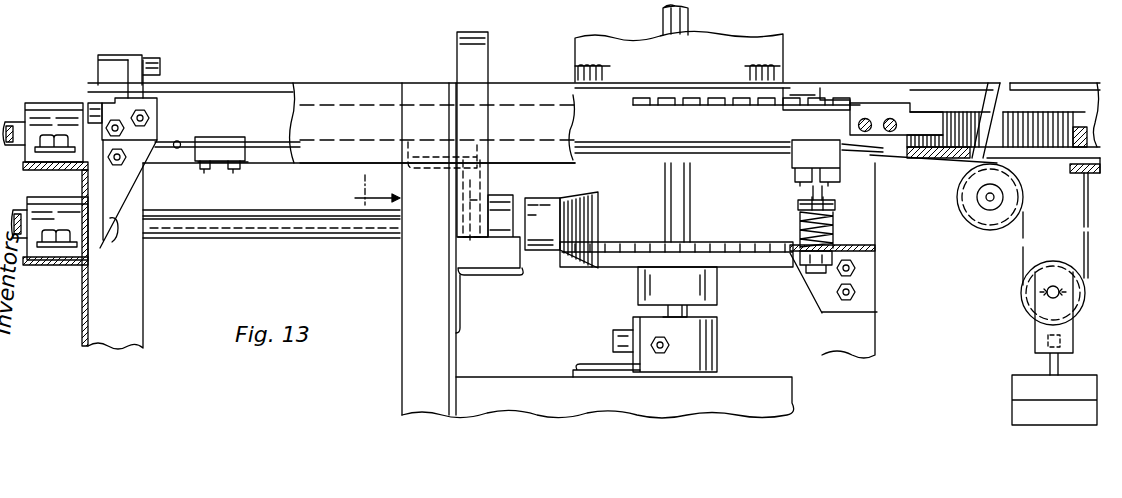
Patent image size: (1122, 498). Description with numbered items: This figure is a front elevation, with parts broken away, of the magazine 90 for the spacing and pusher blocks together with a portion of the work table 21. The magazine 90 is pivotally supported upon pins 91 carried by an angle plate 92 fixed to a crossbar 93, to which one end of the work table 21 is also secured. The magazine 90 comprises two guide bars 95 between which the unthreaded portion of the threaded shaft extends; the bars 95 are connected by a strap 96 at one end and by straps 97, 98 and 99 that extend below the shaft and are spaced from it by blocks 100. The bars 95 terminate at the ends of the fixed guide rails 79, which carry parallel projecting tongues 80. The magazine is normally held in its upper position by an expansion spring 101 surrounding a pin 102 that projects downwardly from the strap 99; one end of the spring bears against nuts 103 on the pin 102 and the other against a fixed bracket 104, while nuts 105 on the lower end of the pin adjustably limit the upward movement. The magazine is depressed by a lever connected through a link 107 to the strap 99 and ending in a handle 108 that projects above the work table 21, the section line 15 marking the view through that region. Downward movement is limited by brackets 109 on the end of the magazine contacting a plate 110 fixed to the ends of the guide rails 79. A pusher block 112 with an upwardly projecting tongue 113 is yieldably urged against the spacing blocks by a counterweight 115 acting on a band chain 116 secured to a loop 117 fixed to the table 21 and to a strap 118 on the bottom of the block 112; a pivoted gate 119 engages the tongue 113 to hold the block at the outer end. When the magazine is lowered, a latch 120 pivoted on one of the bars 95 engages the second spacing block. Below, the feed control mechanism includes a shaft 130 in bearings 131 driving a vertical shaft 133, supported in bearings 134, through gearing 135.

The section line 15 is at (377, 189).
The work table 21 is at (346, 92).
The guide rails 79 is at (1090, 120).
The projecting tongues 80 is at (952, 98).
The magazine 90 is at (222, 118).
The pins 91 is at (122, 167).
The angle plate 92 is at (112, 256).
The crossbar 93 is at (45, 171).
The guide bars 95 is at (776, 123).
The strap 96 is at (98, 109).
The strap 97 is at (219, 162).
The strap 98 is at (440, 126).
The strap 99 is at (814, 185).
The blocks 100 is at (224, 152).
The expansion spring 101 is at (809, 228).
The pin 102 is at (813, 204).
The nuts 103 is at (834, 200).
The fixed bracket 104 is at (874, 253).
The nuts 105 is at (791, 264).
The link 107 is at (482, 182).
The handle 108 is at (476, 60).
The brackets 109 is at (883, 110).
The plate 110 is at (944, 155).
The pusher block 112 is at (143, 102).
The tongue 113 is at (127, 65).
The counterweight 115 is at (1011, 391).
The band chain 116 is at (1020, 253).
The loop 117 is at (1076, 175).
The strap 118 is at (158, 146).
The gate 119 is at (146, 63).
The latch 120 is at (825, 104).
The shaft 130 is at (246, 237).
The bearings 131 is at (504, 252).
The vertical shaft 133 is at (679, 234).
The bearings 134 is at (679, 346).
The gearing 135 is at (594, 226).